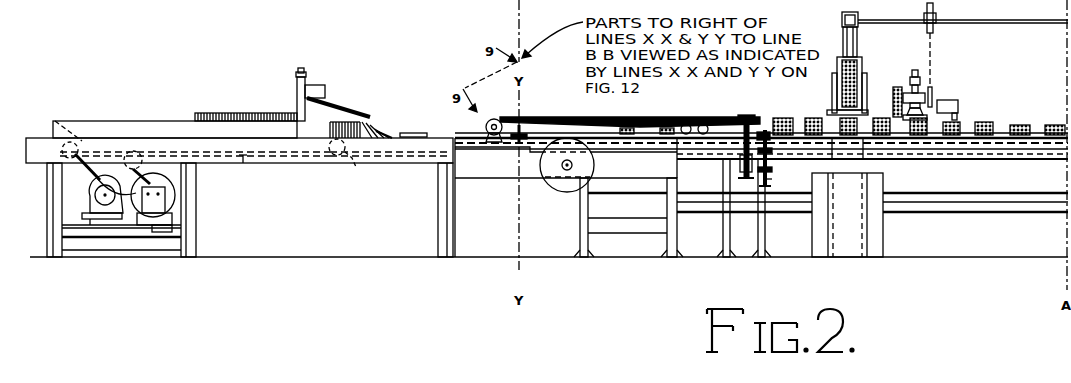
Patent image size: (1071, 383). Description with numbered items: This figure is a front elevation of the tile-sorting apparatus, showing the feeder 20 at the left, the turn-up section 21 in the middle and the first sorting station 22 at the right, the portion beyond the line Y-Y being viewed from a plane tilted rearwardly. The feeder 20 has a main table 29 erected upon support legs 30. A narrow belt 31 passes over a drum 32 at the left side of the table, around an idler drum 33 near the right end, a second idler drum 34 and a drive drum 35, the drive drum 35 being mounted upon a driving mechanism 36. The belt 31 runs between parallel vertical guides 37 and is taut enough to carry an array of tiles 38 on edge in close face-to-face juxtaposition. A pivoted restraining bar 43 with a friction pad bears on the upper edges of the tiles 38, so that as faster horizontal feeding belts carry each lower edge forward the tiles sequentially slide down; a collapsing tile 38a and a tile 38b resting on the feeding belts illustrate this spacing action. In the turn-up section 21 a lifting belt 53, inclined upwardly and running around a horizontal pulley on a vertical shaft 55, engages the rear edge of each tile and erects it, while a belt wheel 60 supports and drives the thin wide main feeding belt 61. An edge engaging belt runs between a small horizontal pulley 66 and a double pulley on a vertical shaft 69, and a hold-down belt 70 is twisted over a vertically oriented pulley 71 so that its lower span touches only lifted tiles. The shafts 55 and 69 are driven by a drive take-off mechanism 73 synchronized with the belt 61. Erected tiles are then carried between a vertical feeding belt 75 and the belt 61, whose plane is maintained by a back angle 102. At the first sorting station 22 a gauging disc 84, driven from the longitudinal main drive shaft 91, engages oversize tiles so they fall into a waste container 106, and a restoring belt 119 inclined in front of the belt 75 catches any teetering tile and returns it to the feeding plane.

The feeder 20 is at (369, 82).
The turn-up section 21 is at (652, 111).
The first sorting station 22 is at (886, 62).
The main table 29 is at (339, 163).
The support legs 30 is at (197, 199).
The belt 31 is at (247, 162).
The drum 32 is at (55, 121).
The idler drum 33 is at (356, 167).
The second idler drum 34 is at (143, 166).
The drive drum 35 is at (95, 187).
The driving mechanism 36 is at (78, 193).
The vertical guides 37 is at (168, 120).
The tiles 38 is at (228, 113).
The collapsing tile 38a is at (388, 136).
The tile resting on feeding belts 38b is at (417, 132).
The restraining bar 43 is at (340, 113).
The lifting belt 53 is at (698, 122).
The vertical shaft 55 is at (741, 150).
The belt wheel 60 is at (596, 165).
The belt 61 is at (612, 194).
The small horizontal pulley 66 is at (514, 145).
The vertical shaft 69 is at (772, 164).
The hold-down belt 70 is at (530, 119).
The pulley 71 is at (489, 118).
The drive take-off mechanism 73 is at (779, 180).
The vertical feeding belt 75 is at (797, 118).
The gauging disc 84 is at (828, 114).
The main drive shaft 91 is at (963, 18).
The back angle 102 is at (960, 118).
The waste container 106 is at (872, 173).
The restoring belt 119 is at (1025, 122).